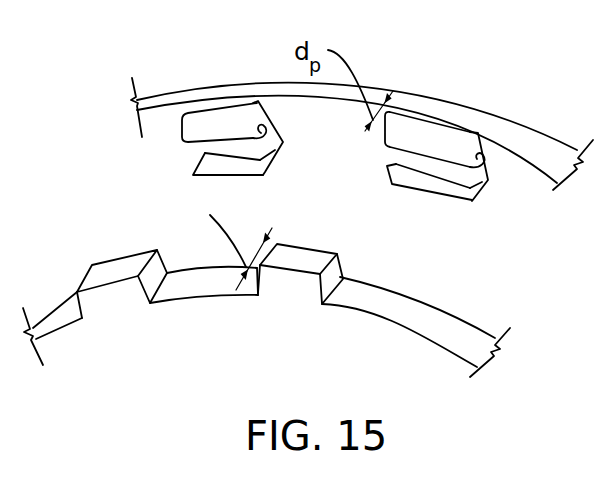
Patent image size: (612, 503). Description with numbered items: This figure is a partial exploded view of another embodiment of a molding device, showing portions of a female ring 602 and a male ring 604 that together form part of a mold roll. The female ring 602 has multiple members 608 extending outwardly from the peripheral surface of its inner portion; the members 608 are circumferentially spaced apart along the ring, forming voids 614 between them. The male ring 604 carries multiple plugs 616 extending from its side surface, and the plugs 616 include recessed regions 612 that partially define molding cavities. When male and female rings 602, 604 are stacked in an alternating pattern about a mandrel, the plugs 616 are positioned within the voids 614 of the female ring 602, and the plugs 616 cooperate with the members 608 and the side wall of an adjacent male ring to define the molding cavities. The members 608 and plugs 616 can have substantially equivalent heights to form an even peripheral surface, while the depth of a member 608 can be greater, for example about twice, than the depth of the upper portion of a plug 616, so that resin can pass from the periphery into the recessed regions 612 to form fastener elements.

The female ring 602 is at (266, 291).
The male ring 604 is at (384, 80).
The members 608 is at (107, 272).
The recessed regions 612 is at (214, 150).
The voids 614 is at (140, 344).
The plugs 616 is at (217, 104).